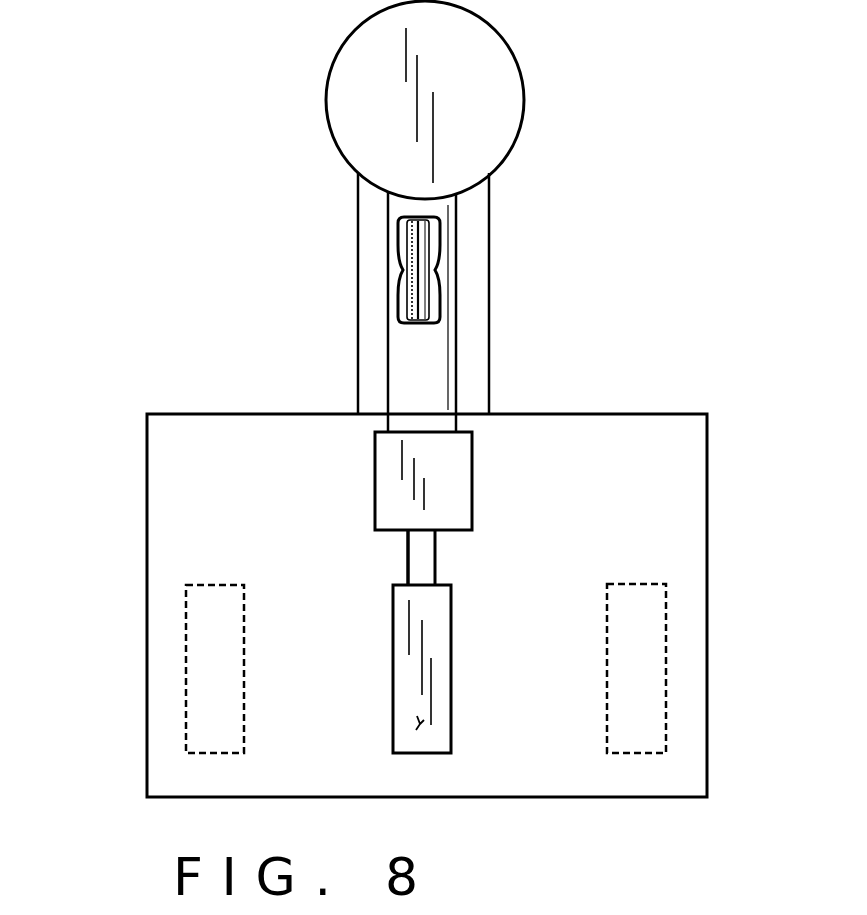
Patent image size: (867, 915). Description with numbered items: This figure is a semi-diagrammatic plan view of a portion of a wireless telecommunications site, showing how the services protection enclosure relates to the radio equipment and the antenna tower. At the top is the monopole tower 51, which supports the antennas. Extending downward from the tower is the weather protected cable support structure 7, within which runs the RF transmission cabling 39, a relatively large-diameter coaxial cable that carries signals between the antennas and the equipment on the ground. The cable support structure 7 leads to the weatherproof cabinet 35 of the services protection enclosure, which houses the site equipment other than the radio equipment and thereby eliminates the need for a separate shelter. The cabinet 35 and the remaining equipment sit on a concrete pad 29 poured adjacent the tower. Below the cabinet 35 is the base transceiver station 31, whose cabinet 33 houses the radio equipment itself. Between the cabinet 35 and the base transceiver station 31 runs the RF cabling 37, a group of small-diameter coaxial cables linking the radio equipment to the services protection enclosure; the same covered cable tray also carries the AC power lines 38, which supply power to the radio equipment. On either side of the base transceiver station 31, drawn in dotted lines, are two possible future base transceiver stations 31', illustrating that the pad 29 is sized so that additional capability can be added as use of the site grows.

The monopole tower 51 is at (507, 36).
The cable support structure 7 is at (457, 312).
The RF transmission cabling 39 is at (428, 243).
The concrete pad 29 is at (444, 797).
The weatherproof cabinet 35 is at (366, 463).
The RF cabling 37 is at (436, 560).
The AC power lines 38 is at (407, 563).
The base transceiver station 31 is at (473, 669).
The cabinet 33 is at (422, 722).
The other base transceiver stations 31' is at (398, 719).